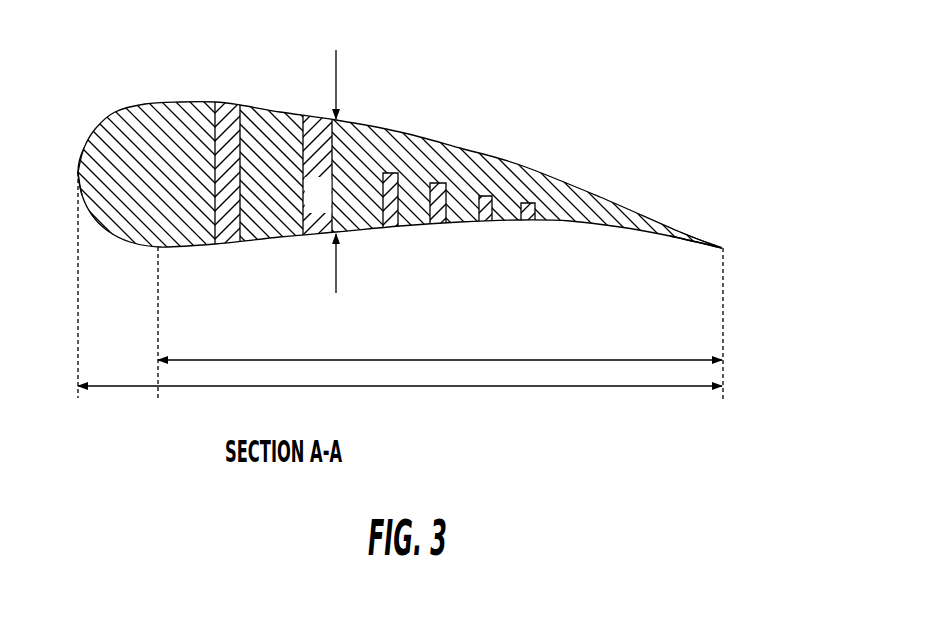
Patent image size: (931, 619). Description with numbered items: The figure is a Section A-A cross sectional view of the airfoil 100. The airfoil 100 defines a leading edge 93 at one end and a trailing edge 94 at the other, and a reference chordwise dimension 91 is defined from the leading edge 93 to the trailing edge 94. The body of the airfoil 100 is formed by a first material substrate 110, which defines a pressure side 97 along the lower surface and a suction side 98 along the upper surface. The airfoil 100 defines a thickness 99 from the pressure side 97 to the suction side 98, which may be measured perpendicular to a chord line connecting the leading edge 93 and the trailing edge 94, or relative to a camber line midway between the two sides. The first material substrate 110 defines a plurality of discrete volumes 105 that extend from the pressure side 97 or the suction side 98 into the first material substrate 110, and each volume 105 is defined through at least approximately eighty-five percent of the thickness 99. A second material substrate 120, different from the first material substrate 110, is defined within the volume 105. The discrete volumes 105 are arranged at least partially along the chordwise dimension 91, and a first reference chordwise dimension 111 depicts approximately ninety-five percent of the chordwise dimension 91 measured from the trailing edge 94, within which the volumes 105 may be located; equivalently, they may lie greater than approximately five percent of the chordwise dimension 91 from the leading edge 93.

The airfoil 100 is at (531, 128).
The first material substrate 110 is at (130, 122).
The second material substrate 120 is at (226, 107).
The discrete volume 105 is at (318, 197).
The suction side 98 is at (190, 99).
The pressure side 97 is at (191, 248).
The leading edge 93 is at (76, 175).
The trailing edge 94 is at (728, 240).
The thickness 99 is at (337, 85).
The first reference chordwise dimension 111 is at (500, 360).
The chordwise dimension 91 is at (430, 386).